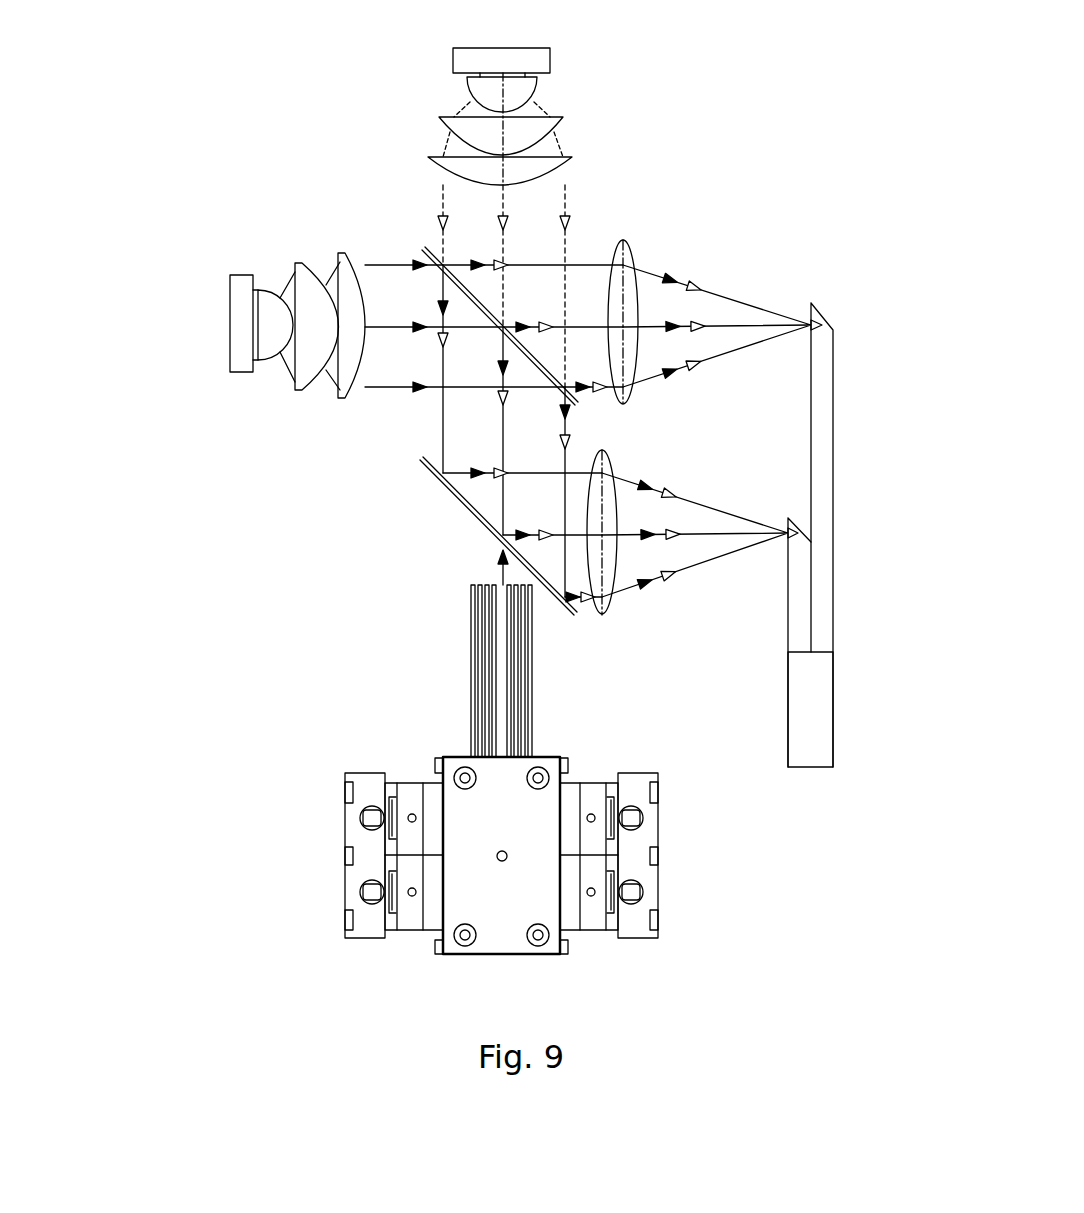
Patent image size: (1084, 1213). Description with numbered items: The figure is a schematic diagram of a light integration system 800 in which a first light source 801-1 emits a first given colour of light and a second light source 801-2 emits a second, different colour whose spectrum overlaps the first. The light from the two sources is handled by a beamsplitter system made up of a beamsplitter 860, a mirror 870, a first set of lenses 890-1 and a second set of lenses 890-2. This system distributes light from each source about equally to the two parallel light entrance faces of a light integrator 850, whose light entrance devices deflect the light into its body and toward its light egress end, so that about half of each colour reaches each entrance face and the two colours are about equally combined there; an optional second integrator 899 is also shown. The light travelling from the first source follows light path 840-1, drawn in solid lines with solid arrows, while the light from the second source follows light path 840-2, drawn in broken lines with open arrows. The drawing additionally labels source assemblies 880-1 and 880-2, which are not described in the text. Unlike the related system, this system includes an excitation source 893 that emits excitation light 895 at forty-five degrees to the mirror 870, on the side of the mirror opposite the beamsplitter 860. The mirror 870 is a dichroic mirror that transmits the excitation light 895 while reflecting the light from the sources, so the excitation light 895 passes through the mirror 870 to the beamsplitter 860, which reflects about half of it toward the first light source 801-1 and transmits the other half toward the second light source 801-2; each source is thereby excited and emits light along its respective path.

The system 800 is at (160, 960).
The first light source 801-1 is at (230, 308).
The second light source 801-2 is at (550, 52).
The light path 840-1 is at (400, 387).
The light path 840-2 is at (567, 197).
The light integrator 850 is at (835, 577).
The beamsplitter 860 is at (423, 248).
The mirror 870 is at (433, 468).
The first illumination module 880-1 is at (275, 411).
The second illumination module 880-2 is at (605, 109).
The first set of lenses 890-1 is at (633, 392).
The second set of lenses 890-2 is at (610, 607).
The excitation source 893 is at (475, 645).
The excitation light 895 is at (497, 573).
The second integrator 899 is at (790, 708).